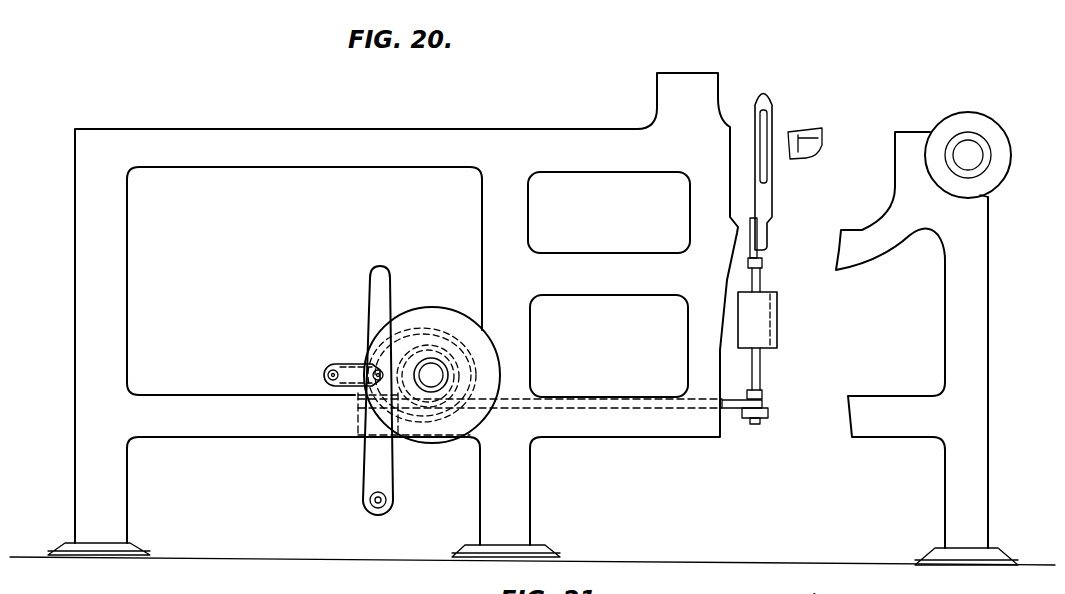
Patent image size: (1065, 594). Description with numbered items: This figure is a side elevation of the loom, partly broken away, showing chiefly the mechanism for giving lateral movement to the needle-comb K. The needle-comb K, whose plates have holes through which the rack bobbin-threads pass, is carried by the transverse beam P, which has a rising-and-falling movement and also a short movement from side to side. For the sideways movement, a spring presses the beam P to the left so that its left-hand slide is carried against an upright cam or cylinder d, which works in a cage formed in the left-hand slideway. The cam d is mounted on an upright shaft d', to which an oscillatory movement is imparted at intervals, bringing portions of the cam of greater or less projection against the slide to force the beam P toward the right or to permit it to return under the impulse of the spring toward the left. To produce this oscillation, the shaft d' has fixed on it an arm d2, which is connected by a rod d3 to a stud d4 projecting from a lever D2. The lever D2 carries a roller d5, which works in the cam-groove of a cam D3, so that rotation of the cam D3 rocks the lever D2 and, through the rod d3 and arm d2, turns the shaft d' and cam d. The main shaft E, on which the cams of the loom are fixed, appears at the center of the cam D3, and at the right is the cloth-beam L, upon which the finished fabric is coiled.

The needle-comb K is at (773, 100).
The transverse beam P is at (762, 262).
The upright cam or cylinder d is at (766, 320).
The upright shaft d' is at (770, 373).
The arm d2 is at (774, 410).
The rod d3 is at (584, 402).
The stud d4 is at (330, 366).
The roller d5 is at (376, 372).
The lever D2 is at (372, 470).
The cam D3 is at (447, 320).
The main shaft E is at (433, 375).
The cloth-beam L is at (968, 144).